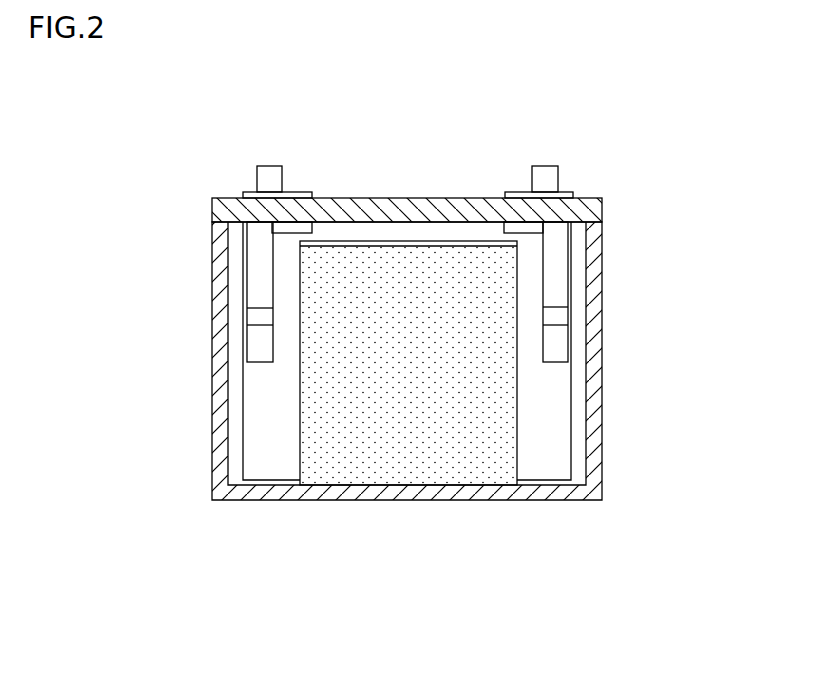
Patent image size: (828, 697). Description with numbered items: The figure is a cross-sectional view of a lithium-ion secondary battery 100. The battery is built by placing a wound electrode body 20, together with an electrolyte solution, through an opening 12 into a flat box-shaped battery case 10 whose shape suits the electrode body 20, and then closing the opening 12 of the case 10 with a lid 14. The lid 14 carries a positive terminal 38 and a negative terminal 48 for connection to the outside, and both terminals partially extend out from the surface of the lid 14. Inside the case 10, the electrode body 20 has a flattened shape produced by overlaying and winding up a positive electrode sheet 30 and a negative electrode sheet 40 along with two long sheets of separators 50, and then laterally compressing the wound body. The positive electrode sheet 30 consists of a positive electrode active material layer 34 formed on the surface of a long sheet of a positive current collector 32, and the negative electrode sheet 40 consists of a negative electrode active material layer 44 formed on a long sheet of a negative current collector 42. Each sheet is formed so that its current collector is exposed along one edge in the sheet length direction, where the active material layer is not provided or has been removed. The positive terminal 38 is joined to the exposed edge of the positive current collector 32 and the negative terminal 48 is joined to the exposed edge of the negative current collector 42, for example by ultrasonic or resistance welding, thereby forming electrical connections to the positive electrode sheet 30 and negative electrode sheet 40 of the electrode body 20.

The lithium-ion secondary battery 100 is at (183, 89).
The battery case 10 is at (458, 306).
The opening 12 is at (387, 237).
The lid 14 is at (351, 197).
The wound electrode body 20 is at (408, 357).
The positive electrode sheet 30 is at (277, 351).
The positive current collector 32 is at (272, 468).
The positive electrode active material layer 34 is at (357, 445).
The positive terminal 38 is at (270, 165).
The negative electrode sheet 40 is at (537, 351).
The negative current collector 42 is at (540, 468).
The negative electrode active material layer 44 is at (488, 445).
The negative terminal 48 is at (546, 172).
The separator 50 is at (413, 467).